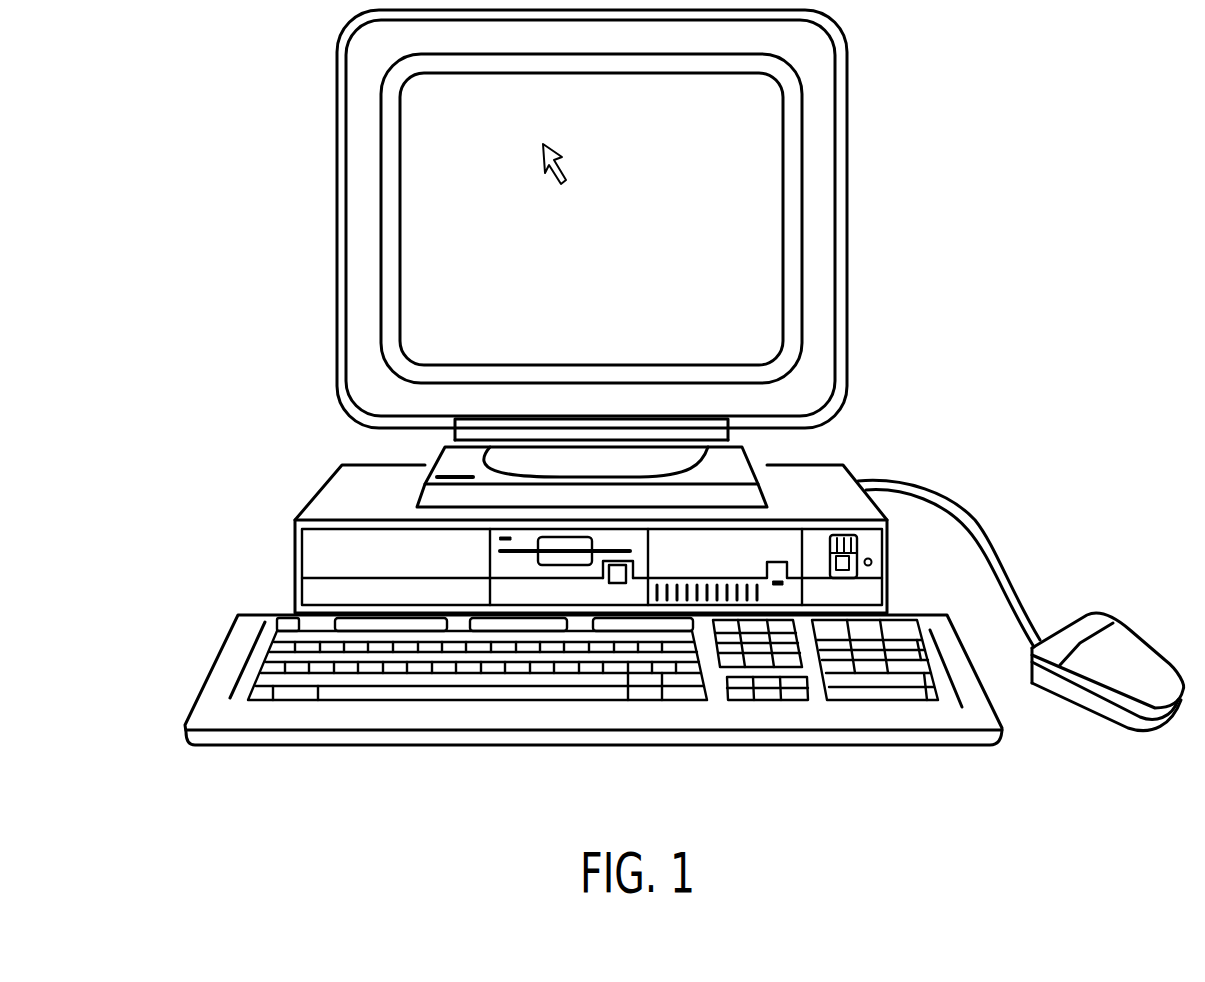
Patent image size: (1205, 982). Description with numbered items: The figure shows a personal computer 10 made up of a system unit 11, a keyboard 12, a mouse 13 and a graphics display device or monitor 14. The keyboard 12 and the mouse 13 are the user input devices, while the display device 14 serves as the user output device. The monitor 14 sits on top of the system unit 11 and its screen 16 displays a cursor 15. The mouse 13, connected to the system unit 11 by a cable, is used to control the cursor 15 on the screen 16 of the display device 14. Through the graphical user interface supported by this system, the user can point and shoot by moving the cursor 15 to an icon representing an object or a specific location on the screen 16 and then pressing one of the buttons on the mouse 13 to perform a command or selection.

The personal computer 10 is at (1121, 145).
The system unit 11 is at (324, 484).
The keyboard 12 is at (428, 746).
The mouse 13 is at (1100, 614).
The graphics display device or monitor 14 is at (849, 193).
The cursor 15 is at (555, 158).
The screen 16 is at (585, 278).